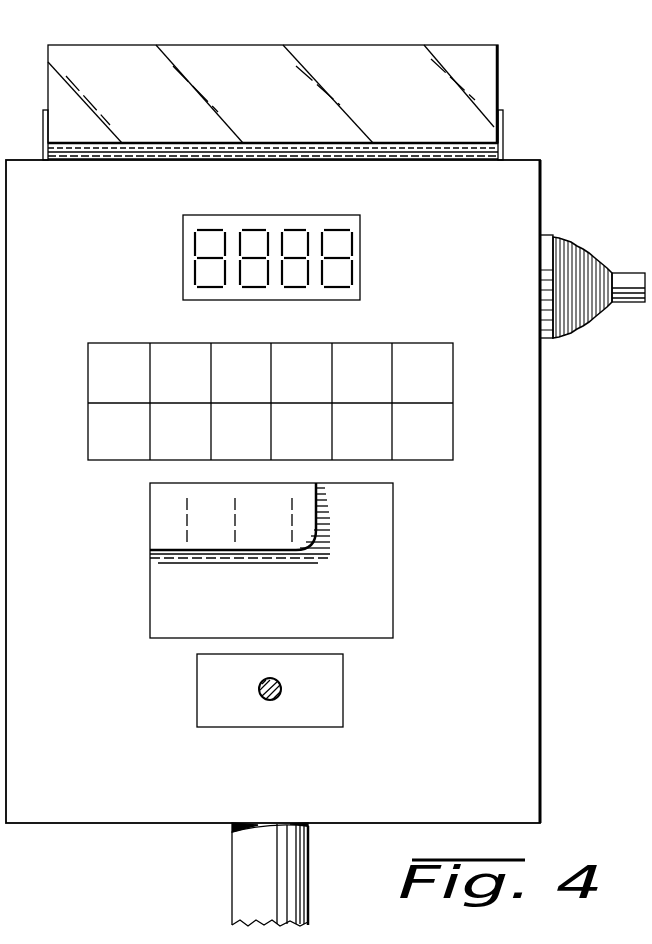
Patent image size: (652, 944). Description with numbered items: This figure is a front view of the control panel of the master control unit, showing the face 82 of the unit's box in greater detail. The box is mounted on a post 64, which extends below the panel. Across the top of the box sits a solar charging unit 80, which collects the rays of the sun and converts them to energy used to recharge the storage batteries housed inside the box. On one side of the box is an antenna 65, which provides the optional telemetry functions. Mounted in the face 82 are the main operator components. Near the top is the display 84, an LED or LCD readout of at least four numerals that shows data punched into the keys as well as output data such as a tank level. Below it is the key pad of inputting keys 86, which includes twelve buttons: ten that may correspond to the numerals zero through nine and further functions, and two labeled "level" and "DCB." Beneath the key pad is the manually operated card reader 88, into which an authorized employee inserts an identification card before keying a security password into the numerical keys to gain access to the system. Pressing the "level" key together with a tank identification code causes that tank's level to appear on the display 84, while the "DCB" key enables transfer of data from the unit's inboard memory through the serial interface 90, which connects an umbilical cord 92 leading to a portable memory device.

The post 64 is at (245, 870).
The antenna 65 is at (625, 276).
The solar charging unit 80 is at (455, 58).
The face 82 is at (528, 538).
The display 84 is at (358, 248).
The inputting keys 86 is at (430, 432).
The manually operated card reader 88 is at (368, 586).
The RS-232 interface 90 is at (327, 690).
The umbilical cord 92 is at (258, 690).